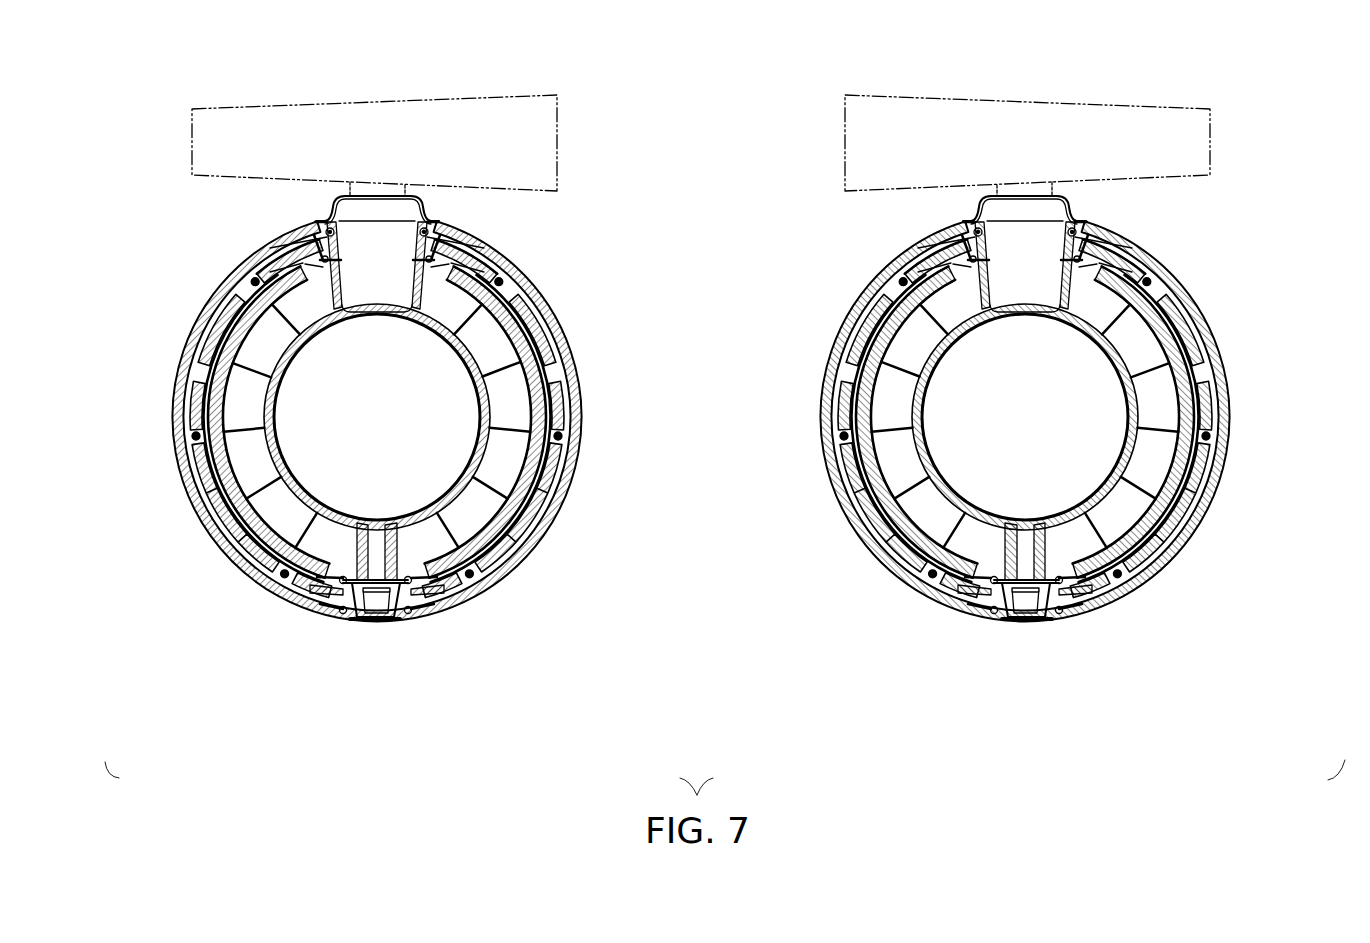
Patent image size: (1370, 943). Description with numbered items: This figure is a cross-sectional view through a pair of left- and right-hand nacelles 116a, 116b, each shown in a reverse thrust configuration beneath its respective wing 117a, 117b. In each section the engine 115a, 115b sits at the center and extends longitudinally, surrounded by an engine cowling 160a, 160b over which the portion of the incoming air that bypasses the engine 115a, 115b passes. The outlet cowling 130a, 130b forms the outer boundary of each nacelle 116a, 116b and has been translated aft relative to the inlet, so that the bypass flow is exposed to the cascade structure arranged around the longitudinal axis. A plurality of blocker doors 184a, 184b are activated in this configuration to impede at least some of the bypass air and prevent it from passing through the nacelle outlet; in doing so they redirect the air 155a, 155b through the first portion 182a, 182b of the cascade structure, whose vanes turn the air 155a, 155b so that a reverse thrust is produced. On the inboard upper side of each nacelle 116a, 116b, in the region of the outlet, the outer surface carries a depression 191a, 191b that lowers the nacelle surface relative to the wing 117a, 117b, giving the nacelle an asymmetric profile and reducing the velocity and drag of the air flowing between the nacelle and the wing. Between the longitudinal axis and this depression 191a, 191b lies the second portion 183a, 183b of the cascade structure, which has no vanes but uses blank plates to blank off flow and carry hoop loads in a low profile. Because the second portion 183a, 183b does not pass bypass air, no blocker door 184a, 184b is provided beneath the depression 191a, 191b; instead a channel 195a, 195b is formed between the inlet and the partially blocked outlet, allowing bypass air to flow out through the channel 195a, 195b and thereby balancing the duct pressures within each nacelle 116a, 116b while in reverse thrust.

The engine 115a is at (385, 475).
The engine 115b is at (992, 475).
The nacelle 116a is at (411, 383).
The nacelle 116b is at (1020, 370).
The wing 117a is at (507, 98).
The wing 117b is at (1022, 102).
The outlet cowling 130a is at (191, 496).
The outlet cowling 130b is at (1211, 496).
The air 155a is at (448, 297).
The air 155b is at (952, 297).
The engine cowling 160a is at (335, 590).
The engine cowling 160b is at (1067, 590).
The first portion of the cascade structure 182a is at (190, 400).
The first portion of the cascade structure 182b is at (843, 520).
The second portion of the cascade structure 183a is at (452, 225).
The second portion of the cascade structure 183b is at (950, 225).
The blocker doors 184a is at (476, 514).
The blocker doors 184b is at (927, 514).
The depression 191a is at (480, 233).
The depression 191b is at (922, 233).
The channel 195a is at (492, 268).
The channel 195b is at (908, 266).